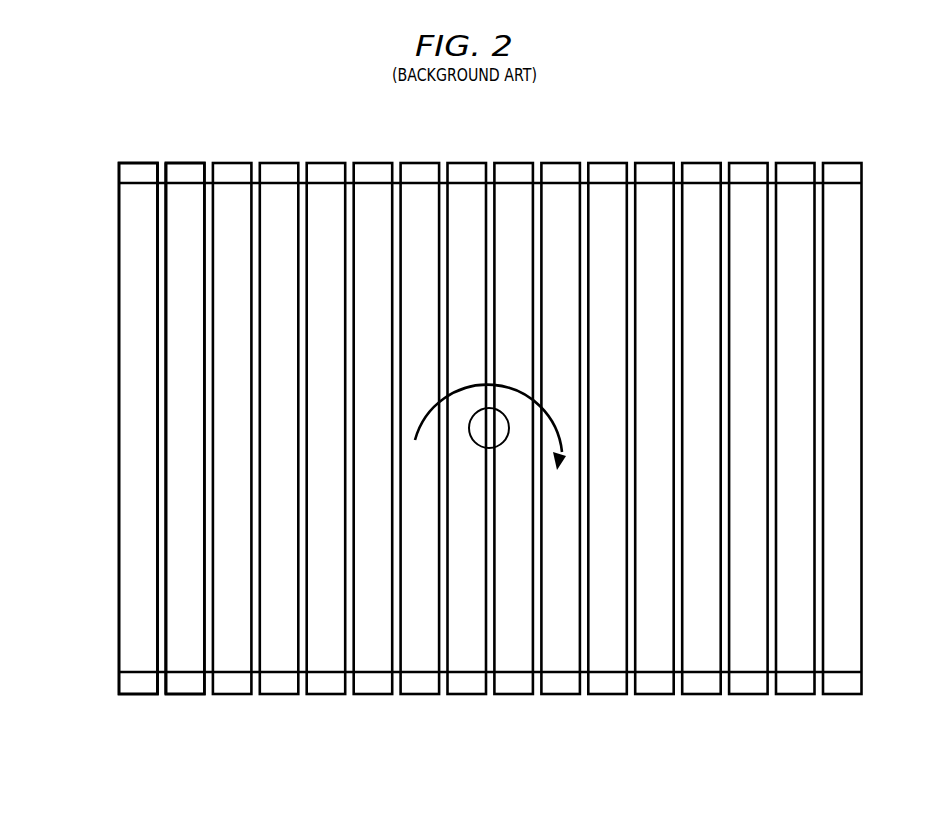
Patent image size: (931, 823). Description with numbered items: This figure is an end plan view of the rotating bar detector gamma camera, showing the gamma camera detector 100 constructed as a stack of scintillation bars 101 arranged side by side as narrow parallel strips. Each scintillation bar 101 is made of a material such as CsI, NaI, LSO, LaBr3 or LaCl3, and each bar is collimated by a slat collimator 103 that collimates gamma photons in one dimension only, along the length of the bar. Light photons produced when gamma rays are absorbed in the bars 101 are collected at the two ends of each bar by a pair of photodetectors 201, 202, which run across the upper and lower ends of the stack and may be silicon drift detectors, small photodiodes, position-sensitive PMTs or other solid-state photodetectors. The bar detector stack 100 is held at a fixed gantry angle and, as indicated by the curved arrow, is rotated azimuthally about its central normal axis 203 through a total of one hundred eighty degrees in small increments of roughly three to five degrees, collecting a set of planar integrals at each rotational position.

The gamma camera detector 100 is at (100, 220).
The scintillation bar 101 is at (185, 622).
The slat collimator 103 is at (160, 698).
The photodetector 201 is at (747, 163).
The photodetector 202 is at (745, 695).
The central normal axis 203 is at (489, 430).